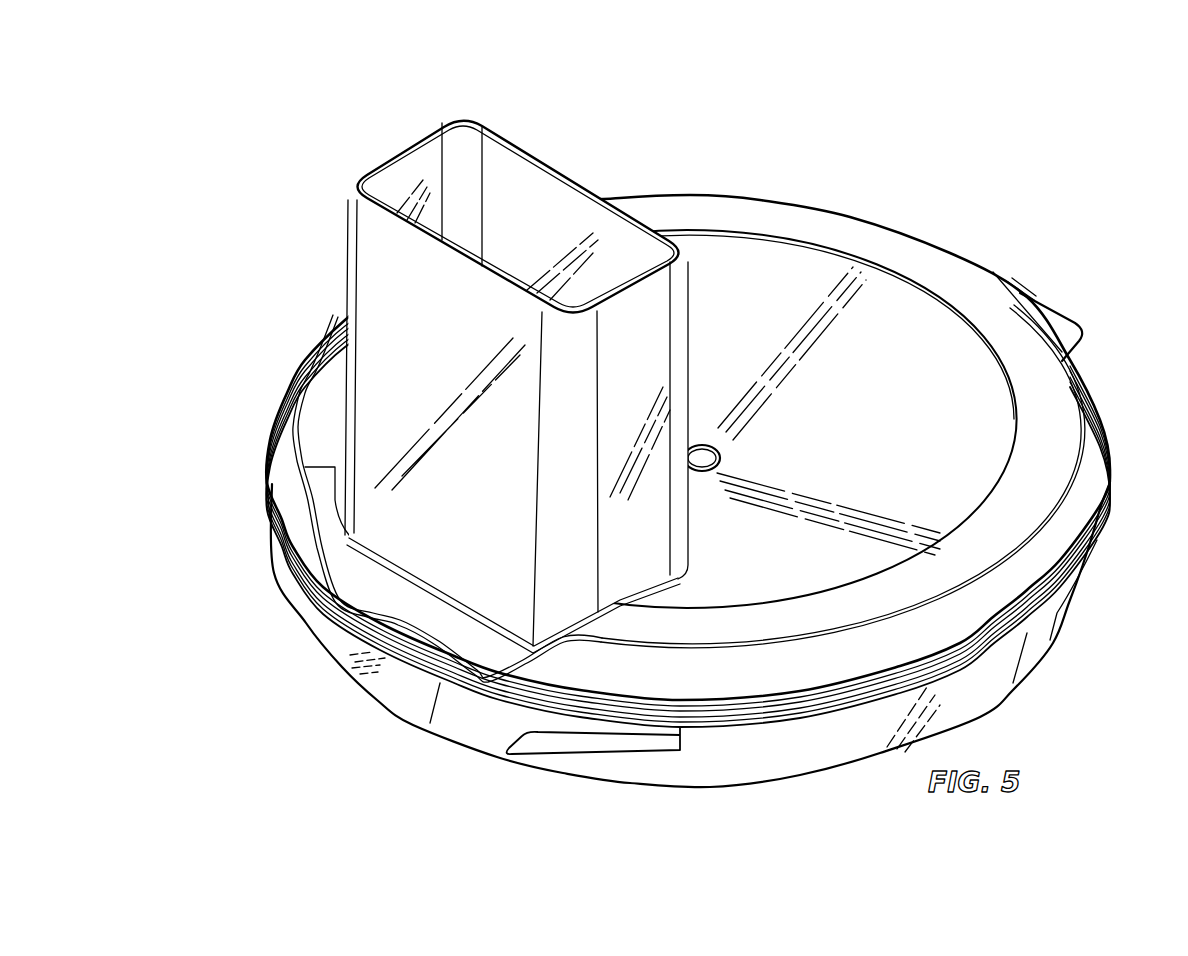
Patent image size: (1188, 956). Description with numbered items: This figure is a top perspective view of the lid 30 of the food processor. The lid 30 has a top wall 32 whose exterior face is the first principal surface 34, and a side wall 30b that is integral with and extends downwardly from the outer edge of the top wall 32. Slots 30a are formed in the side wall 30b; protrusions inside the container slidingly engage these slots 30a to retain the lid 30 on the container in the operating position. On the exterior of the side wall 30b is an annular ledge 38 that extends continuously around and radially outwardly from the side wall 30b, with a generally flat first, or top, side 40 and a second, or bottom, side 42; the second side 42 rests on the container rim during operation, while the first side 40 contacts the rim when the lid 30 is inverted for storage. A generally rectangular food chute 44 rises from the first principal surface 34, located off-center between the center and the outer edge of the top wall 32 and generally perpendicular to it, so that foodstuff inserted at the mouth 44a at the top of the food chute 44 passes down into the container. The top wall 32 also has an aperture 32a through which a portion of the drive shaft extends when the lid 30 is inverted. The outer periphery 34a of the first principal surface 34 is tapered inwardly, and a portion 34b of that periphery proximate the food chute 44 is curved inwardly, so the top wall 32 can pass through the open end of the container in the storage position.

The lid 30 is at (688, 456).
The slots 30a is at (481, 727).
The side wall 30b is at (967, 697).
The top wall 32 is at (870, 235).
The aperture 32a is at (712, 452).
The first principal surface 34 is at (893, 300).
The outer periphery 34a is at (1087, 447).
The portion 34b is at (390, 610).
The annular ledge 38 is at (1098, 534).
The first side 40 is at (1097, 477).
The second side 42 is at (274, 537).
The food chute 44 is at (484, 369).
The mouth 44a is at (463, 150).